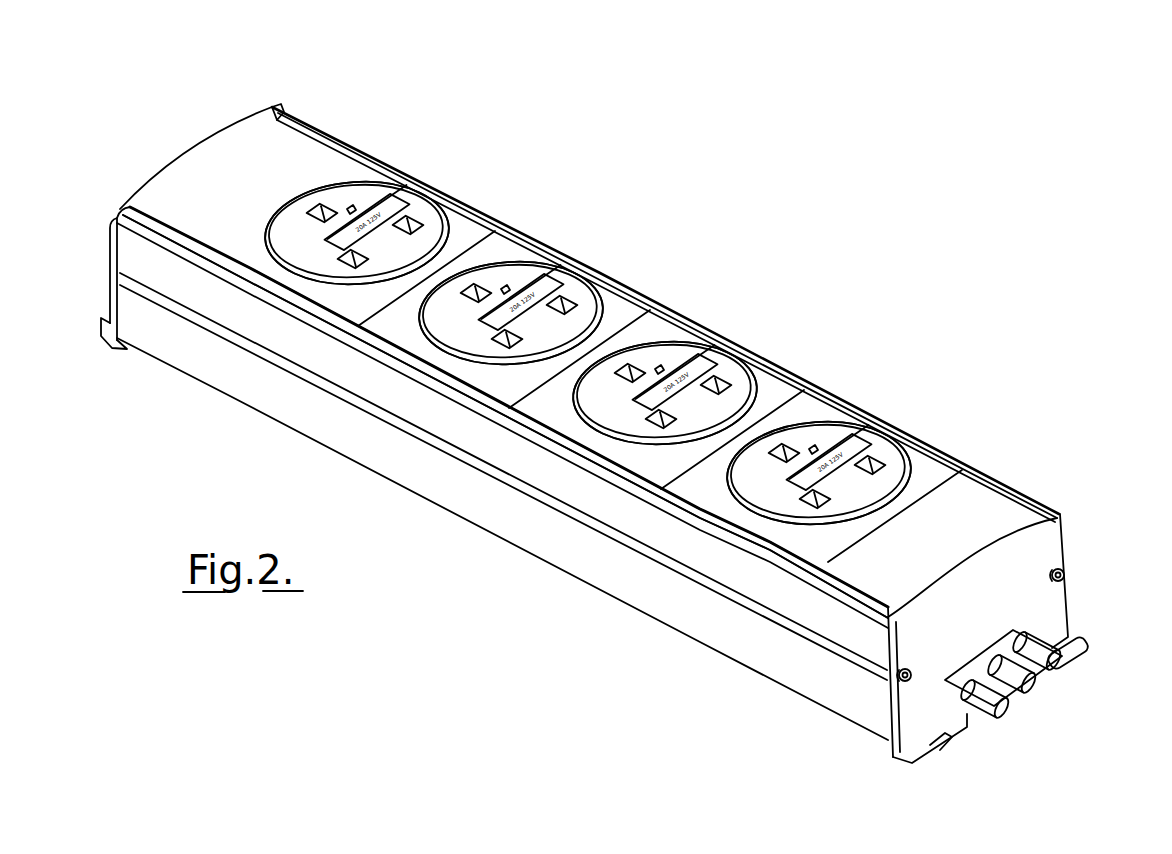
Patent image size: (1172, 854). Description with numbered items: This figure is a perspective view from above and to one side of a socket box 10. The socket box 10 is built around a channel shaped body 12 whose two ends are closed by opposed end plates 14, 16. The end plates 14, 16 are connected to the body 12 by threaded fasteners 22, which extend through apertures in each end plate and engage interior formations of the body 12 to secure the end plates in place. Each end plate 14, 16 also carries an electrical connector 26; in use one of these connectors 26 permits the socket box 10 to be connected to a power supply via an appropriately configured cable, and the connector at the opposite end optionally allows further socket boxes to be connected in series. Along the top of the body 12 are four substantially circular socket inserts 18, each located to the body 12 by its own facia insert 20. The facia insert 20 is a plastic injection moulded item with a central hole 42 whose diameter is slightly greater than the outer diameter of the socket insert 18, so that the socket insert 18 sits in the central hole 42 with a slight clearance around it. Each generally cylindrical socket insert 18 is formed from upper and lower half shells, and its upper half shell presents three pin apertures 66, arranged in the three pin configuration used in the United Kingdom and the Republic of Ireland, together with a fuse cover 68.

The socket box 10 is at (1008, 354).
The channel shaped body 12 is at (293, 414).
The end plate 14 is at (1038, 547).
The end plate 16 is at (187, 190).
The socket insert 18 is at (343, 193).
The facia insert 20 is at (248, 250).
The threaded fastener 22 is at (1066, 580).
The electrical connector 26 is at (1018, 710).
The central hole 42 is at (293, 277).
The pin aperture 66 is at (425, 242).
The fuse cover 68 is at (382, 203).